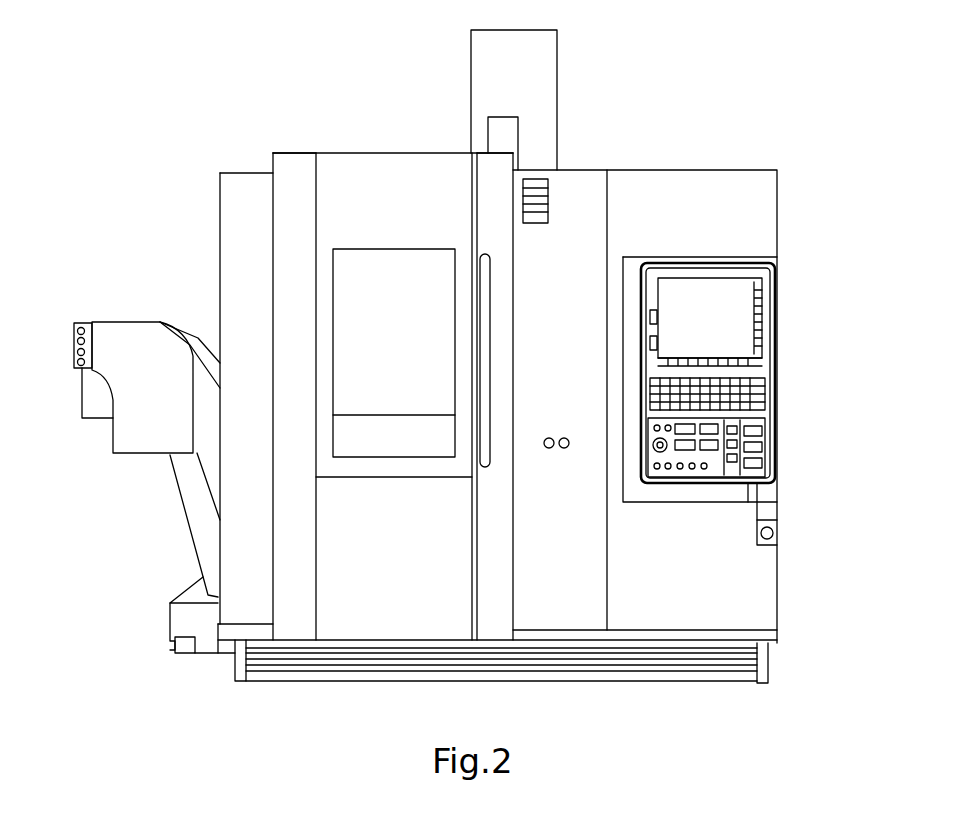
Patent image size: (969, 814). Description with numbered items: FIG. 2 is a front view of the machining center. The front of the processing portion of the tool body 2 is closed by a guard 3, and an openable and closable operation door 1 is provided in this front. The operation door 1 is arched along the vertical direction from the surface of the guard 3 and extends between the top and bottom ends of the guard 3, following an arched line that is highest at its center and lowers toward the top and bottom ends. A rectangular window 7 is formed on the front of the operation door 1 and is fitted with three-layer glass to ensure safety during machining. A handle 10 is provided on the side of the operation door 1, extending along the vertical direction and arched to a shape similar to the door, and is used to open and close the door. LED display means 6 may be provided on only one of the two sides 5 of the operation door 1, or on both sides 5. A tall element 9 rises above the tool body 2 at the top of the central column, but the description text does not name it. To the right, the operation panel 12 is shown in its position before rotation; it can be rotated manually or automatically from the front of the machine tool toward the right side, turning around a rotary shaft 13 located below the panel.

The operation door 1 is at (404, 163).
The tool body 2 is at (746, 152).
The guard 3 is at (232, 187).
The sides of the operation door 5 is at (292, 172).
The LED display means 6 is at (540, 190).
The window 7 is at (382, 272).
The tower 9 is at (546, 53).
The handle 10 is at (483, 278).
The operation panel 12 is at (783, 369).
The rotary shaft 13 is at (765, 489).